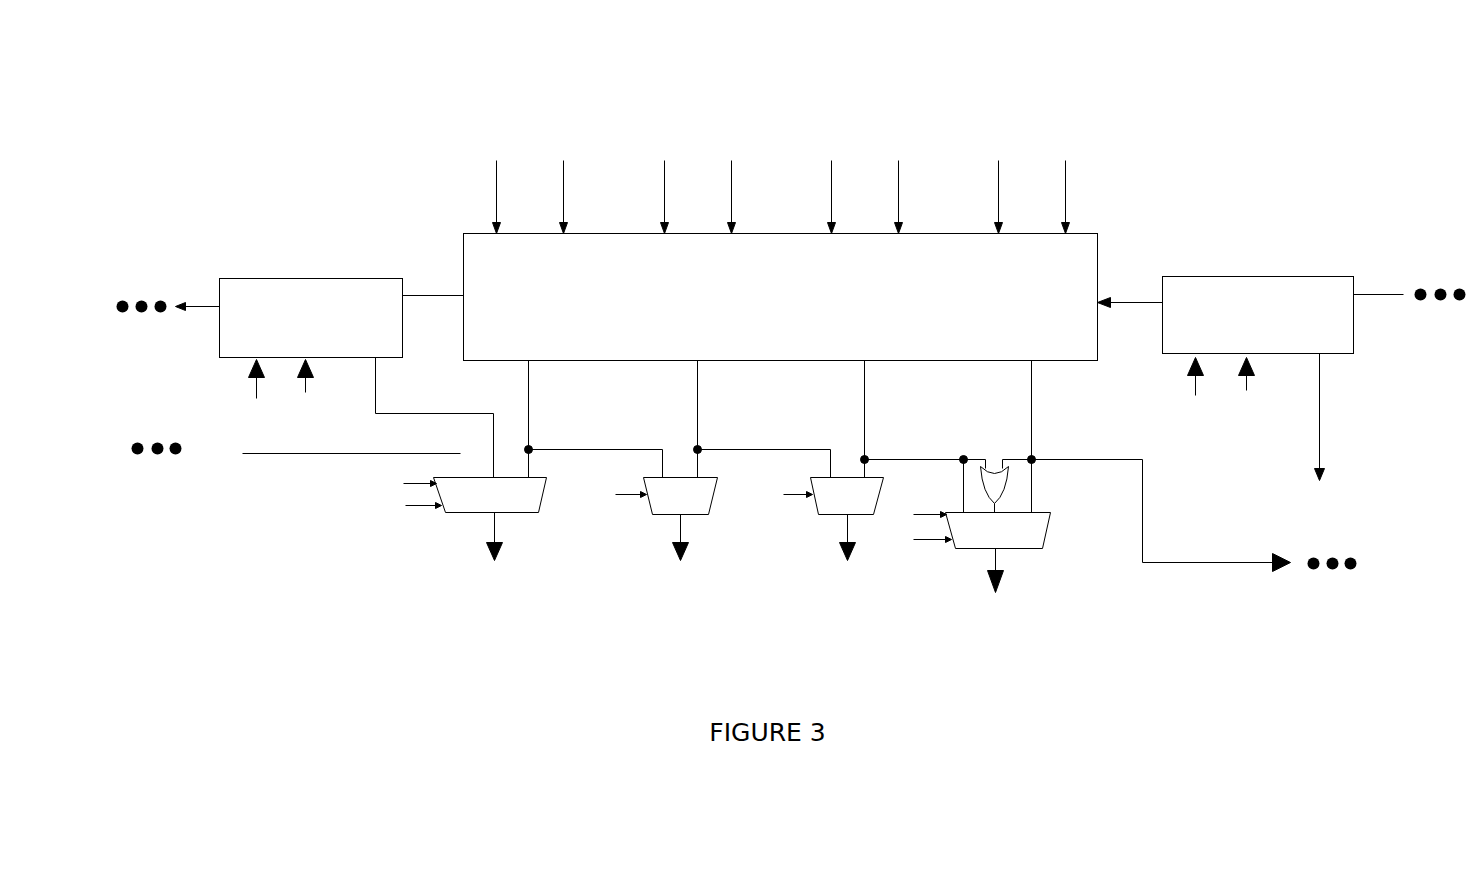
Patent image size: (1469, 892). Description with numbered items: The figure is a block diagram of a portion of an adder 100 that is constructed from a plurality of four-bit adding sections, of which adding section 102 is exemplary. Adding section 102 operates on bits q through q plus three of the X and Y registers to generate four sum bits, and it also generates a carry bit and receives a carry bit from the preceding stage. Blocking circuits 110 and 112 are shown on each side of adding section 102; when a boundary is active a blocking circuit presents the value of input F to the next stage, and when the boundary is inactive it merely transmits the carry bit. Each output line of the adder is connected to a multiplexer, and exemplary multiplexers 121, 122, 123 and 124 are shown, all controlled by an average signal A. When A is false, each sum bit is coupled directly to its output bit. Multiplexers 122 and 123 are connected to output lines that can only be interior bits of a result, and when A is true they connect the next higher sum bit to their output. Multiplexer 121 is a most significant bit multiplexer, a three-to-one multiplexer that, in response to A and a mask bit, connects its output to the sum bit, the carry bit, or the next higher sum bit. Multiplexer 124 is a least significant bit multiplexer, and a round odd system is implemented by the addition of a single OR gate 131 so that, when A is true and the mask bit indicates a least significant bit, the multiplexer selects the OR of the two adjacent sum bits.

The adder 100 is at (282, 115).
The adding section 102 is at (1097, 248).
The blocking circuit 110 is at (1335, 275).
The blocking circuit 112 is at (392, 278).
The most significant bit multiplexer 121 is at (537, 505).
The multiplexer 122 is at (700, 507).
The multiplexer 123 is at (820, 512).
The least significant bit multiplexer 124 is at (1037, 525).
The OR gate 131 is at (998, 478).